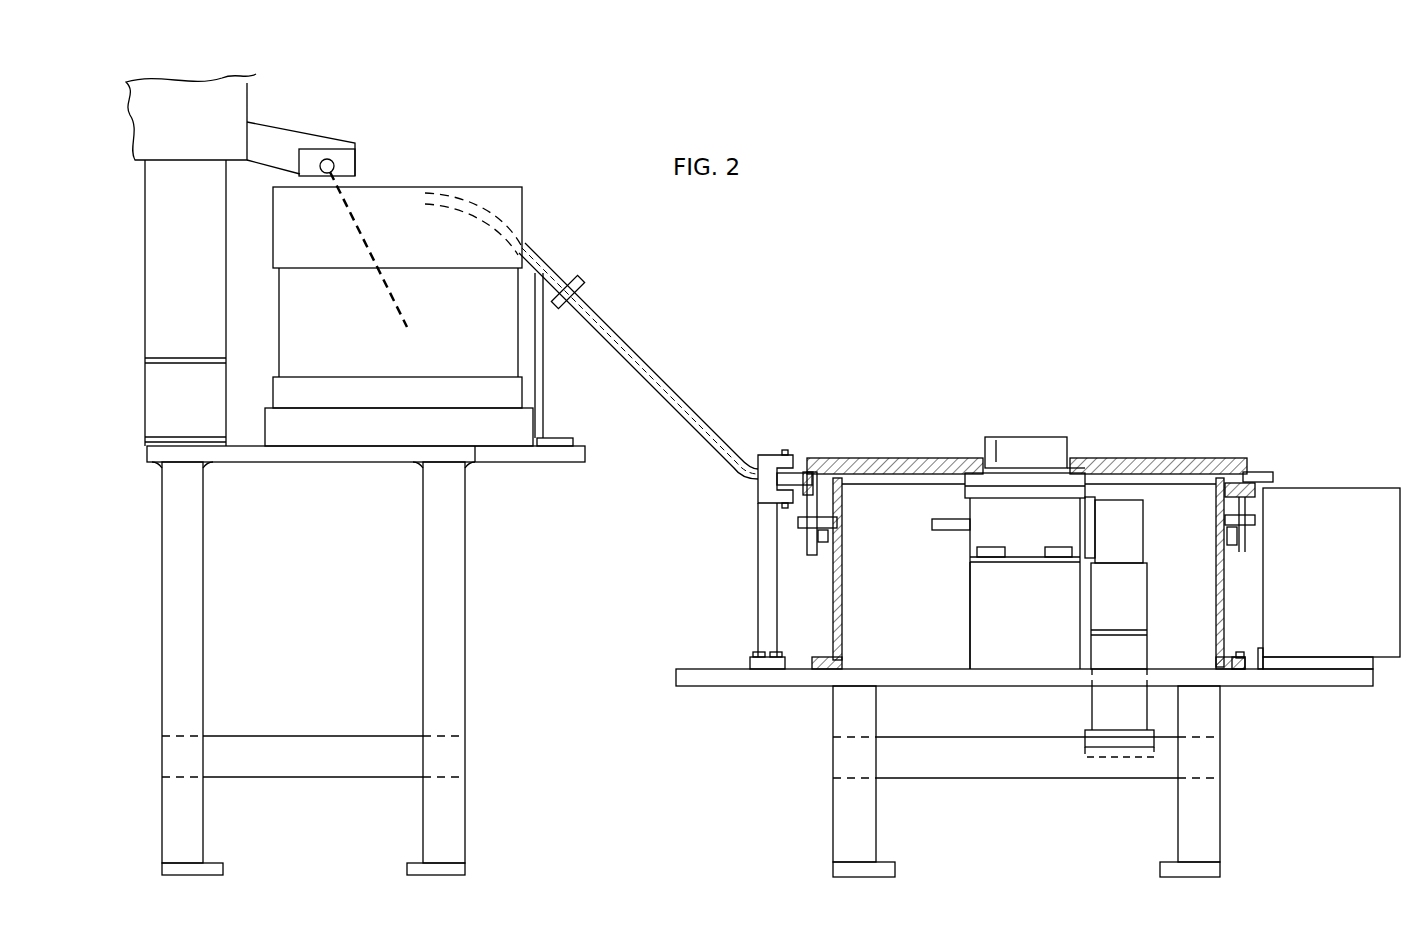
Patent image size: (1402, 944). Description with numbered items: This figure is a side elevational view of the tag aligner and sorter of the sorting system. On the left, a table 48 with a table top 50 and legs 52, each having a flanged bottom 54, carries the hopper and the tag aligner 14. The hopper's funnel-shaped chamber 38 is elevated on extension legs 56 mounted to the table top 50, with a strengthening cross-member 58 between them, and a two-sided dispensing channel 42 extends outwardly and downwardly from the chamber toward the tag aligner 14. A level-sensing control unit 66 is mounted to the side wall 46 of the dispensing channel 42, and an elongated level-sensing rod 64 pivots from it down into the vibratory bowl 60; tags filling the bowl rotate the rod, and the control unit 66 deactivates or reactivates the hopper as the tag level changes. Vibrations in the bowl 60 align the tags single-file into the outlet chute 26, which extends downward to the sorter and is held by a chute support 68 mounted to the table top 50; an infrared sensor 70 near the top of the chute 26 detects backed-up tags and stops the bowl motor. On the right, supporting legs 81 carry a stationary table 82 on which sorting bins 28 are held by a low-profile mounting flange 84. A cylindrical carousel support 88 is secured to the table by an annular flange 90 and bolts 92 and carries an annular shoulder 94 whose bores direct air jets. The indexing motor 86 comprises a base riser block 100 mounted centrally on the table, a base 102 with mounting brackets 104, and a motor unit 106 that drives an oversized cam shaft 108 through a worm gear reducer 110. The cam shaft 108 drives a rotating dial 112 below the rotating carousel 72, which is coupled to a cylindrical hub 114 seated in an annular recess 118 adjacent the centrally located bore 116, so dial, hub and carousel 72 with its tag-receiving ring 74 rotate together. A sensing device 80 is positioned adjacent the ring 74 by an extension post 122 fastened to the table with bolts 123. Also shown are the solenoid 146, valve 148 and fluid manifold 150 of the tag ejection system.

The tag aligner 14 is at (438, 279).
The outlet chute 26 is at (680, 395).
The sorting bin 28 is at (1338, 498).
The funnel-shaped chamber 38 is at (197, 132).
The dispensing channel 42 is at (336, 121).
The side wall 46 is at (300, 133).
The table 48 is at (366, 670).
The table top 50 is at (510, 456).
The legs 52 is at (442, 703).
The flanged bottom 54 is at (415, 875).
The extension legs 56 is at (200, 282).
The strengthening cross-member 58 is at (178, 366).
The vibratory bowl 60 is at (420, 188).
The level-sensing rod 64 is at (353, 233).
The level-sensing control unit 66 is at (355, 165).
The chute support 68 is at (545, 376).
The infrared sensor 70 is at (578, 283).
The rotating carousel 72 is at (1187, 458).
The tag-receiving ring 74 is at (1257, 472).
The sensing device 80 is at (768, 452).
The supporting legs 81 is at (1212, 815).
The stationary table 82 is at (1312, 676).
The mounting flange 84 is at (1347, 660).
The indexing motor 86 is at (1015, 568).
The carousel support 88 is at (832, 588).
The annular flange 90 is at (1238, 652).
The bolts 92 is at (1245, 652).
The annular shoulder 94 is at (1253, 495).
The base riser block 100 is at (987, 622).
The base 102 is at (973, 537).
The mounting brackets 104 is at (992, 550).
The motor unit 106 is at (1130, 600).
The cam shaft 108 is at (932, 524).
The worm gear reducer 110 is at (1127, 530).
The rotating dial 112 is at (1073, 480).
The cylindrical hub 114 is at (1035, 445).
The centrally located bore 116 is at (1000, 462).
The annular recess 118 is at (1072, 460).
The extension post 122 is at (758, 578).
The bolts 123 is at (752, 660).
The solenoid 146 is at (828, 540).
The valve 148 is at (830, 521).
The fluid manifold 150 is at (805, 522).